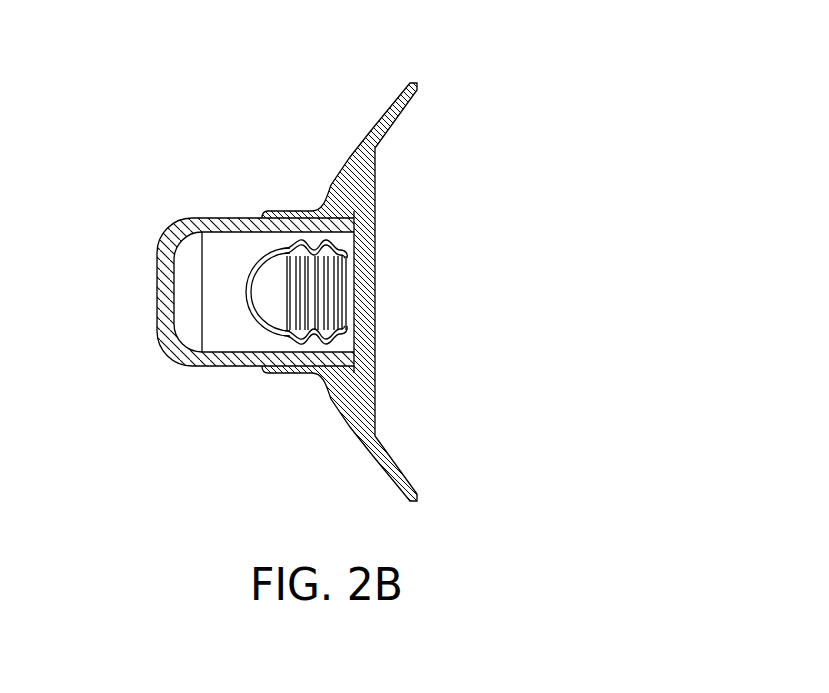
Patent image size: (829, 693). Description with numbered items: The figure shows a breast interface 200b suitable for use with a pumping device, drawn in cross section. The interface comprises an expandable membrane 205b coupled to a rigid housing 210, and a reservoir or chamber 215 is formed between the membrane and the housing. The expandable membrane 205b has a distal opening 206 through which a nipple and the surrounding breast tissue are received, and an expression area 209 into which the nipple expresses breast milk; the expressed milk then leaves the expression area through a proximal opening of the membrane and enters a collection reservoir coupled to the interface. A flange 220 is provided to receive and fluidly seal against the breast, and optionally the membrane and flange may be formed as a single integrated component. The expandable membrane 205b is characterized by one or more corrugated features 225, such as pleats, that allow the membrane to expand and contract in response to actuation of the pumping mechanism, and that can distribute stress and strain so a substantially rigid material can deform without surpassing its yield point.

The breast interface 200b is at (146, 139).
The expandable membrane 205b is at (290, 337).
The distal opening 206 is at (343, 292).
The expression area 209 is at (271, 283).
The rigid housing 210 is at (168, 231).
The chamber 215 is at (213, 309).
The flange 220 is at (374, 128).
The corrugated features 225 is at (298, 240).